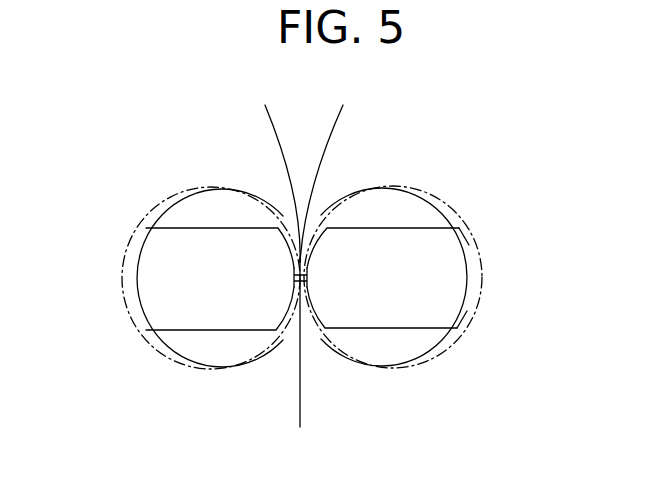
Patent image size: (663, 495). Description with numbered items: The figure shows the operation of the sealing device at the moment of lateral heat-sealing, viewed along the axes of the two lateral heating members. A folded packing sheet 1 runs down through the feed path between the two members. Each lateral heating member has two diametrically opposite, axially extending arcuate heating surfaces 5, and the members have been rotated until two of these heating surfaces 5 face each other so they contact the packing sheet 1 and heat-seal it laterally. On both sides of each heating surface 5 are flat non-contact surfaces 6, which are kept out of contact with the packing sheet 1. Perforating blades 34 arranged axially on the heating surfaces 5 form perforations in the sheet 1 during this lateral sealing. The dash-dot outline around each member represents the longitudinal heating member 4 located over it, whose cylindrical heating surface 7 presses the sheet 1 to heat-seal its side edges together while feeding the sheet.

The packing sheet 1 is at (327, 152).
The longitudinal heating member 4 is at (311, 246).
The cylindrical heating surface 7 is at (433, 192).
The arcuate heating surface 5 is at (130, 273).
The non-contact surface 6 is at (217, 230).
The perforating blade 34 is at (294, 268).